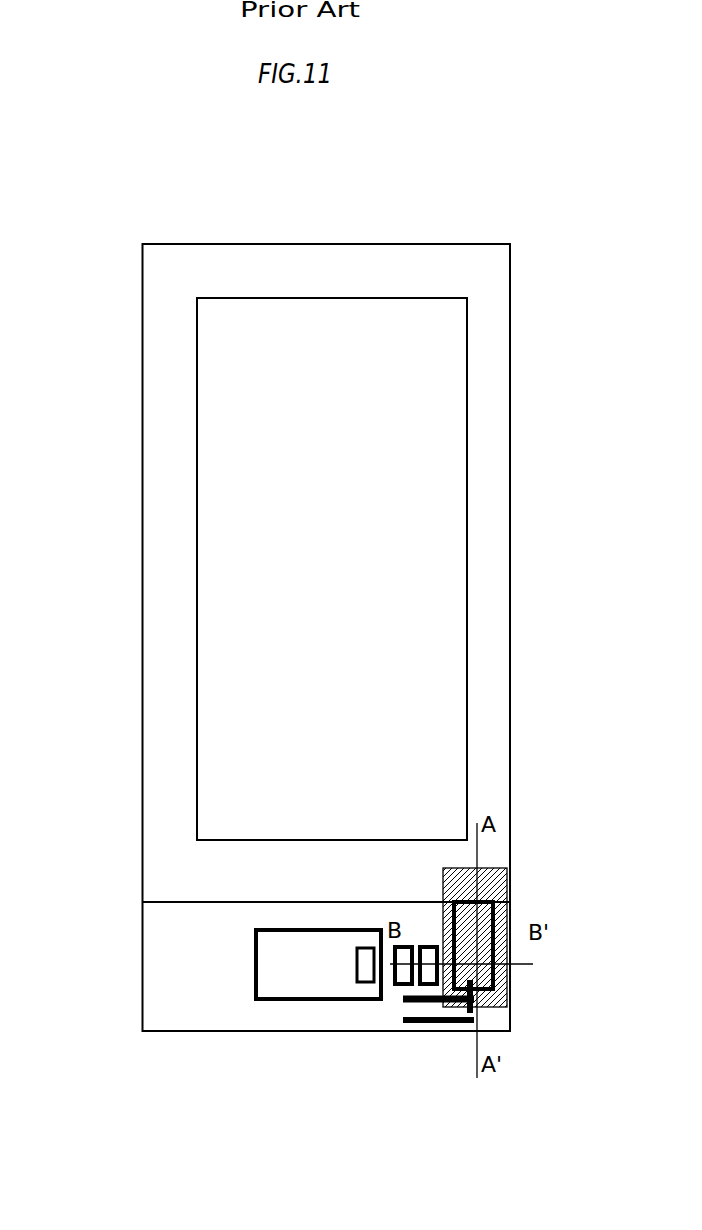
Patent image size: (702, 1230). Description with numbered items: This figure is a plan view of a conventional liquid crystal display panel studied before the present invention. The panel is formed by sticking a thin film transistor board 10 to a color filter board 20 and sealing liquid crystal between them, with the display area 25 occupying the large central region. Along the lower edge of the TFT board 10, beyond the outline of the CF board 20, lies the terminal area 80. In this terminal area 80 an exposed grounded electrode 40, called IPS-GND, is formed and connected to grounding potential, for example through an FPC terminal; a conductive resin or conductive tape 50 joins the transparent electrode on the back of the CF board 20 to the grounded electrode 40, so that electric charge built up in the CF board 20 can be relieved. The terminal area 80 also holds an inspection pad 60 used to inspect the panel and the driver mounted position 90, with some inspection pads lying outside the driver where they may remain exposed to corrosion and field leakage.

The thin film transistor board 10 is at (142, 968).
The color filter board 20 is at (160, 445).
The display area 25 is at (327, 343).
The grounded electrode 40 is at (498, 1000).
The conductive tape 50 is at (502, 868).
The inspection pad 60 is at (405, 976).
The terminal area 80 is at (170, 993).
The driver mounted position 90 is at (288, 973).